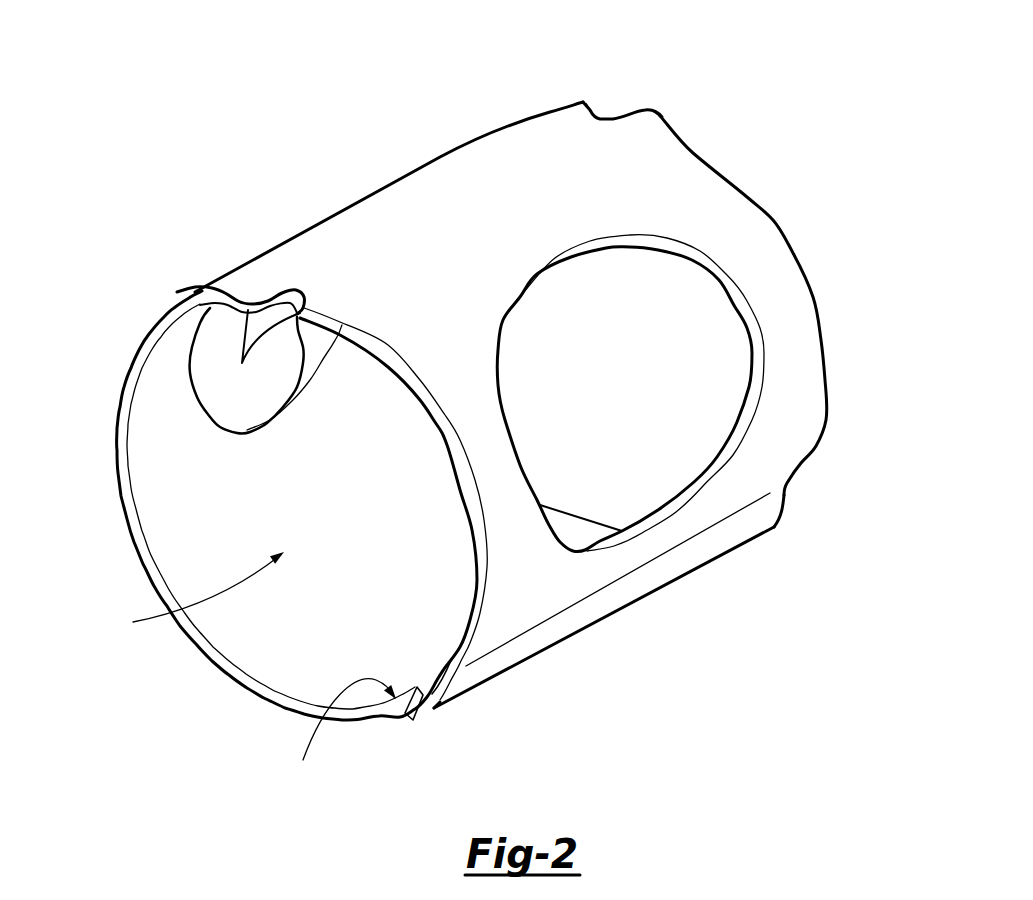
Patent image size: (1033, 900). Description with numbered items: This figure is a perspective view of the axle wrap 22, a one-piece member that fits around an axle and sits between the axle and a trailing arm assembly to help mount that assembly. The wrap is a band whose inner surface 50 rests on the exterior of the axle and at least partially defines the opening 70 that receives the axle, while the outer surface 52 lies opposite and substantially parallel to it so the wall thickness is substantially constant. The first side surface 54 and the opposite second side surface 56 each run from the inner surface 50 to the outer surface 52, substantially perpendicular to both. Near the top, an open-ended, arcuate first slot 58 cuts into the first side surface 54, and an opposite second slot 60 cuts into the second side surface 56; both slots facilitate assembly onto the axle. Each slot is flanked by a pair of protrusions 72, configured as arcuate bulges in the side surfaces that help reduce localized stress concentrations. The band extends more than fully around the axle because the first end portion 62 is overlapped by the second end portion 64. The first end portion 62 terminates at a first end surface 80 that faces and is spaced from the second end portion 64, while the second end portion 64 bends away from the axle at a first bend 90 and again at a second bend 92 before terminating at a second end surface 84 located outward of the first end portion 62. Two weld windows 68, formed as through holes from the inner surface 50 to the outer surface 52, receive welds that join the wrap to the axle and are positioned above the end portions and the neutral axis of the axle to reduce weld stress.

The axle wrap 22 is at (522, 397).
The inner surface 50 is at (180, 548).
The outer surface 52 is at (357, 233).
The first side surface 54 is at (222, 660).
The second side surface 56 is at (775, 222).
The first slot 58 is at (290, 290).
The second slot 60 is at (610, 117).
The first end portion 62 is at (336, 735).
The second end portion 64 is at (440, 718).
The weld window 68 is at (265, 367).
The opening 70 is at (194, 592).
The protrusion 72 is at (242, 363).
The first end surface 80 is at (430, 690).
The second end surface 84 is at (407, 720).
The first bend 90 is at (573, 607).
The second bend 92 is at (503, 677).